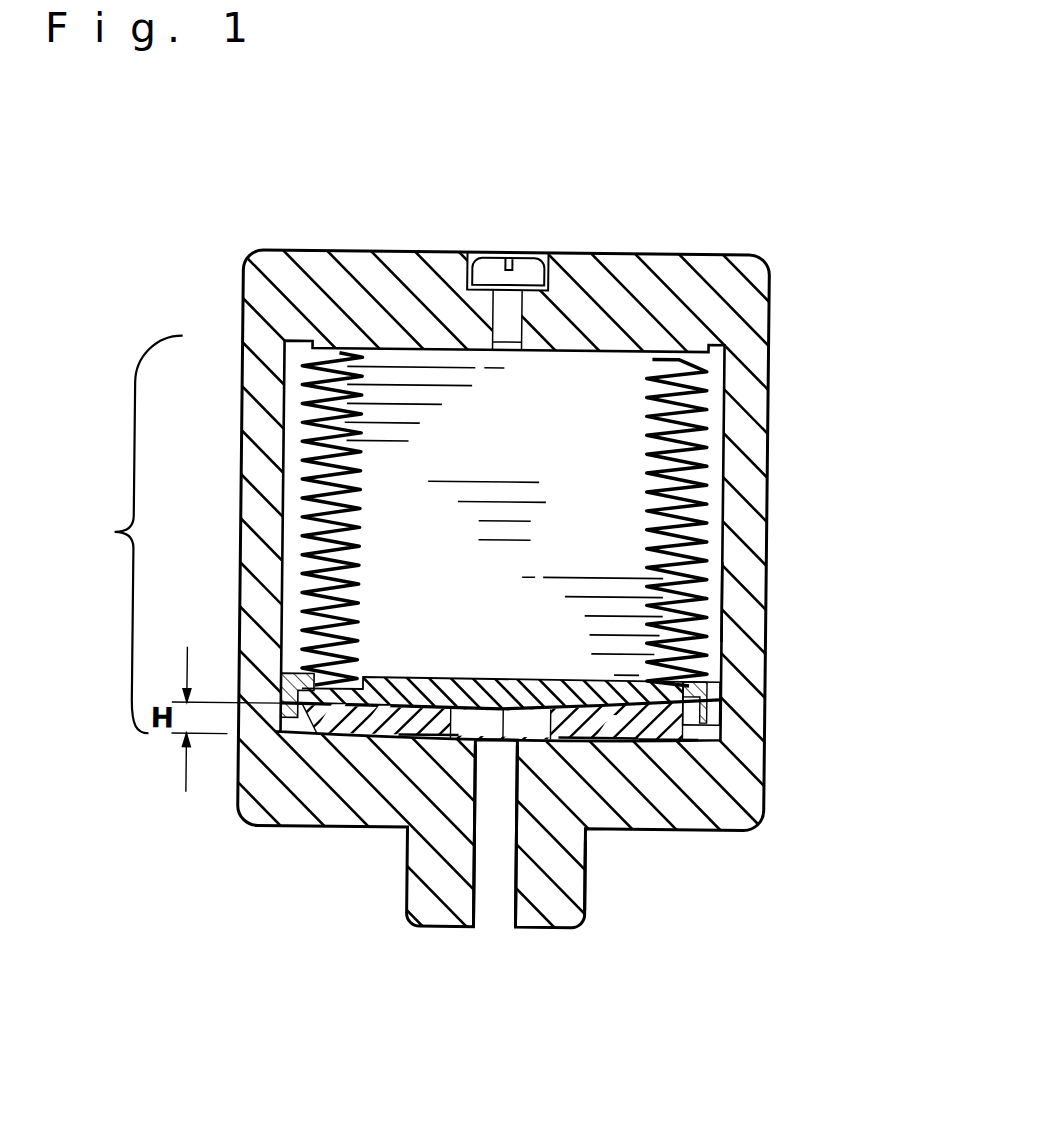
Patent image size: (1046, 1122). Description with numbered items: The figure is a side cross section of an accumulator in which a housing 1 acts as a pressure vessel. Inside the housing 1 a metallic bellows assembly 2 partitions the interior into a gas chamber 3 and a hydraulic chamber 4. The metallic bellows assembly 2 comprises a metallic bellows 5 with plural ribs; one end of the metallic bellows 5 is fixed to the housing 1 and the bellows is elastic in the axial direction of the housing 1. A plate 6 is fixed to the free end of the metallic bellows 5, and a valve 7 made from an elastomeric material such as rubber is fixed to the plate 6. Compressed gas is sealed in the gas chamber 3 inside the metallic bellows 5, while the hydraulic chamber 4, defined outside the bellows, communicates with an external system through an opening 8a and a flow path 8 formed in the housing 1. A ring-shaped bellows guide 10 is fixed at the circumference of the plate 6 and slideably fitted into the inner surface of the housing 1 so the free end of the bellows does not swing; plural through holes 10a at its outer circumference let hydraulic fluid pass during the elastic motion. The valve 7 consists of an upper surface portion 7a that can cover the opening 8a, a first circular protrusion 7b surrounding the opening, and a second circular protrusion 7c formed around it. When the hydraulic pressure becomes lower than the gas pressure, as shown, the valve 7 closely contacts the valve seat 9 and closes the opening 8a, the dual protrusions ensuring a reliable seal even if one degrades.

The housing 1 is at (754, 779).
The metallic bellows assembly 2 is at (132, 534).
The gas chamber 3 is at (632, 546).
The hydraulic chamber 4 is at (715, 610).
The metallic bellows 5 is at (700, 442).
The plate 6 is at (719, 704).
The valve 7 is at (744, 852).
The upper surface portion 7a is at (582, 886).
The first circular protrusion 7b is at (601, 738).
The second circular protrusion 7c is at (663, 740).
The flow path 8 is at (480, 852).
The opening 8a is at (488, 740).
The valve seat 9 is at (420, 744).
The bellows guide 10 is at (297, 676).
The through hole 10a is at (722, 712).